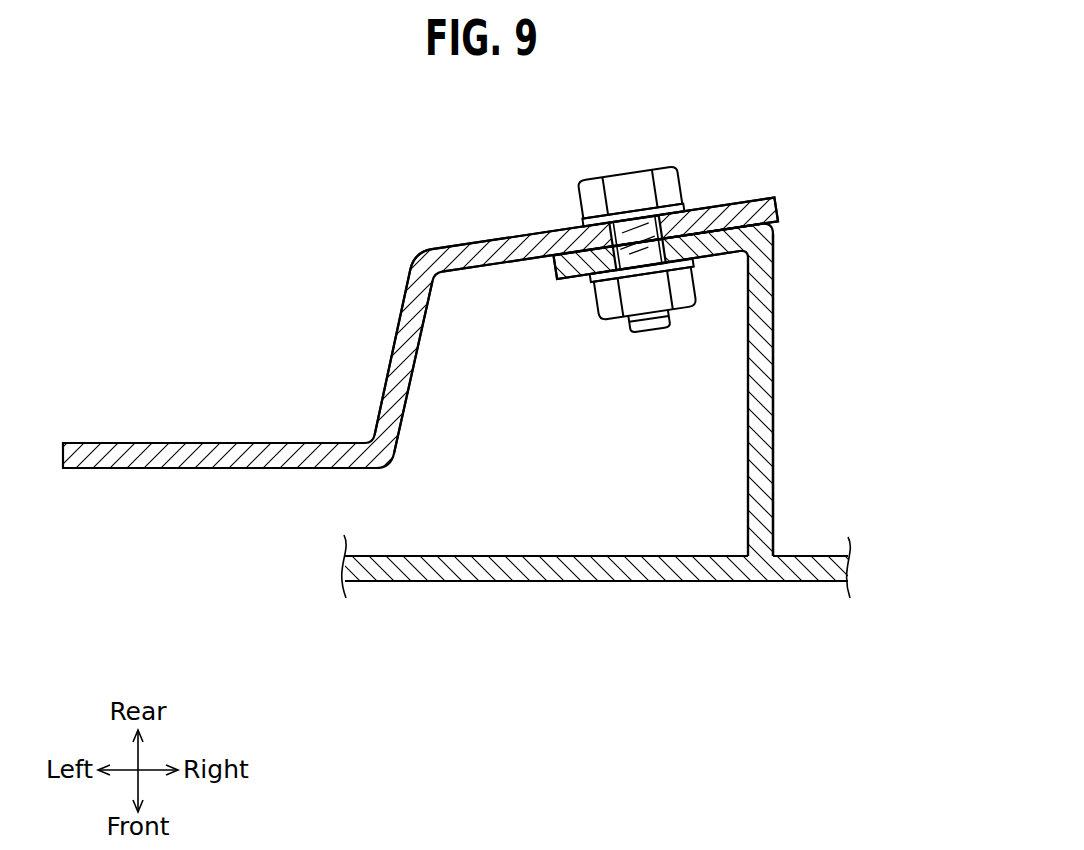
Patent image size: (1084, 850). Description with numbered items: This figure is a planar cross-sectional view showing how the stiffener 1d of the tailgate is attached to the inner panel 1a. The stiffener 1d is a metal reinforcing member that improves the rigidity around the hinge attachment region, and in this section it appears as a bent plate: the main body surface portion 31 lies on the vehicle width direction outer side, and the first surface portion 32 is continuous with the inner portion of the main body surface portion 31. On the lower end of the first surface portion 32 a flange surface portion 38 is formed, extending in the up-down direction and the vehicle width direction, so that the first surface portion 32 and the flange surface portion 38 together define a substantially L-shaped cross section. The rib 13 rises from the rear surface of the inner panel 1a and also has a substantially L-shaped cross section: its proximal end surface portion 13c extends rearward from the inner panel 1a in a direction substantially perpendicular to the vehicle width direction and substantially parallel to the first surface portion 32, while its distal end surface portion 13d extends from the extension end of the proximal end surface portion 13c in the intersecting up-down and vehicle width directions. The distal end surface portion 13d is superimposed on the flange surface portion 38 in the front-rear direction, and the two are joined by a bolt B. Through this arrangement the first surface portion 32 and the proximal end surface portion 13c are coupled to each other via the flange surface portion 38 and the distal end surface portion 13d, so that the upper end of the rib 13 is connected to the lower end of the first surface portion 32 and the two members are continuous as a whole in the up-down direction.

The inner panel 1a is at (603, 630).
The stiffener 1d is at (423, 250).
The rib 13 is at (775, 390).
The proximal end surface portion 13c is at (765, 333).
The distal end surface portion 13d is at (715, 247).
The main body surface portion 31 is at (248, 462).
The first surface portion 32 is at (410, 331).
The flange surface portion 38 is at (502, 240).
The bolt B is at (667, 190).